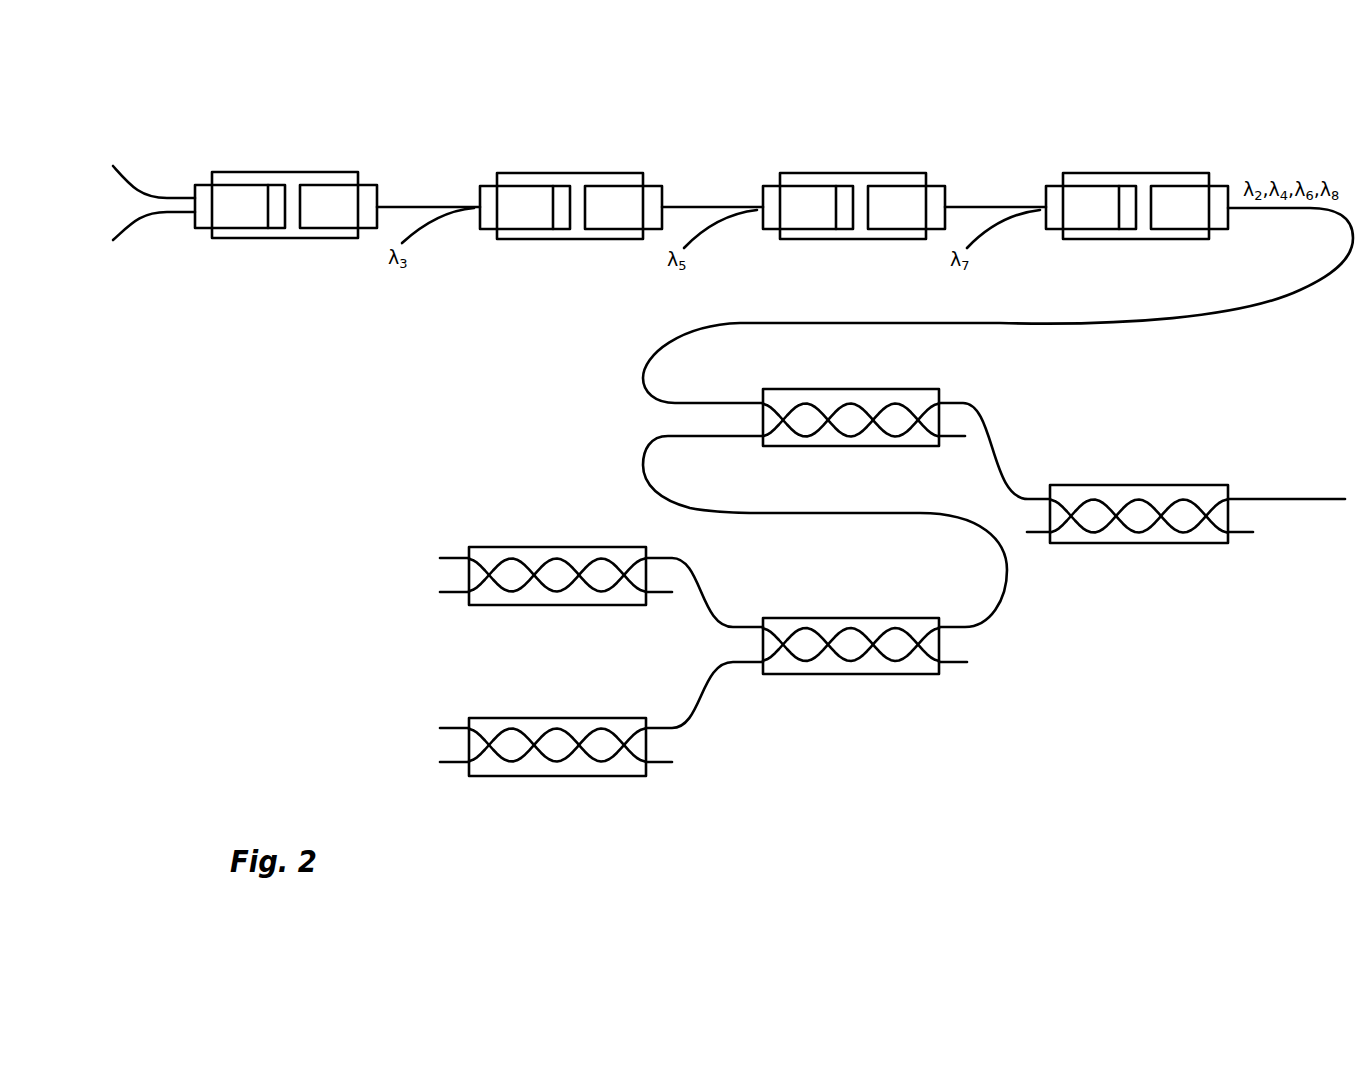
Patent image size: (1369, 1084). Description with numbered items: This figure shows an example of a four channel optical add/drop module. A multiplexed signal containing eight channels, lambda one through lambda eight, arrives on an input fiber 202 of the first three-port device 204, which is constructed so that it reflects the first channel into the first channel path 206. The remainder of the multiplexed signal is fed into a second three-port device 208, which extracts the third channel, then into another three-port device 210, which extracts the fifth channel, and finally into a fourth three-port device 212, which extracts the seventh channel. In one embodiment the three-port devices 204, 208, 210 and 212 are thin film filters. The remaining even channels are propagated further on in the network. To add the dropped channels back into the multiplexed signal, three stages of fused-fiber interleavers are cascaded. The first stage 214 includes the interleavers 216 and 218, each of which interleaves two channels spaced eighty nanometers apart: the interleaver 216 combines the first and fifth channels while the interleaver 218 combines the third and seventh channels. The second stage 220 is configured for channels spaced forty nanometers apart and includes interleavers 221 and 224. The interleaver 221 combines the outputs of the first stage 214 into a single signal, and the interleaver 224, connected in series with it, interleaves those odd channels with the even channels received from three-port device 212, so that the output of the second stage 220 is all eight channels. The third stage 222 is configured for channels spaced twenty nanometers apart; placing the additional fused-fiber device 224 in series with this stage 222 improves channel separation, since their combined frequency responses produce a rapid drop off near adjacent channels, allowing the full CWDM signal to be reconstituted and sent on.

The input fiber 202 is at (171, 196).
The first three-port device 204 is at (275, 172).
The first channel path 206 is at (171, 214).
The second three-port device 208 is at (560, 173).
The third three-port device 210 is at (842, 173).
The fourth three-port device 212 is at (1127, 173).
The first stage 214 is at (588, 688).
The interleaver 216 is at (540, 547).
The interleaver 218 is at (540, 718).
The second stage 220 is at (909, 633).
The interleaver 221 is at (865, 672).
The third stage 222 is at (1227, 800).
The interleaver 224 is at (850, 446).